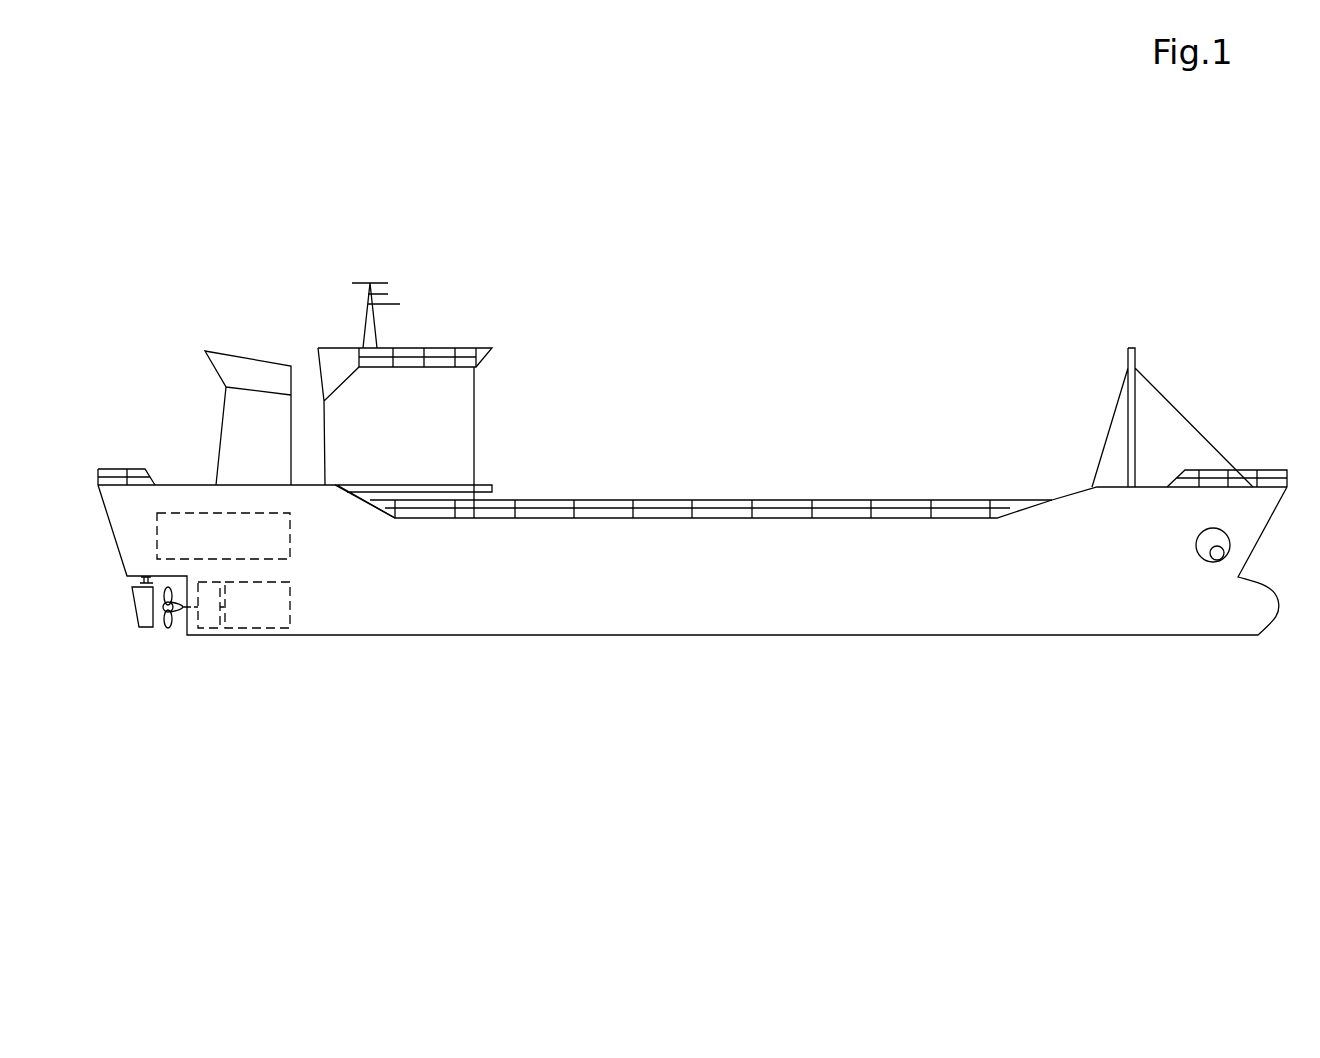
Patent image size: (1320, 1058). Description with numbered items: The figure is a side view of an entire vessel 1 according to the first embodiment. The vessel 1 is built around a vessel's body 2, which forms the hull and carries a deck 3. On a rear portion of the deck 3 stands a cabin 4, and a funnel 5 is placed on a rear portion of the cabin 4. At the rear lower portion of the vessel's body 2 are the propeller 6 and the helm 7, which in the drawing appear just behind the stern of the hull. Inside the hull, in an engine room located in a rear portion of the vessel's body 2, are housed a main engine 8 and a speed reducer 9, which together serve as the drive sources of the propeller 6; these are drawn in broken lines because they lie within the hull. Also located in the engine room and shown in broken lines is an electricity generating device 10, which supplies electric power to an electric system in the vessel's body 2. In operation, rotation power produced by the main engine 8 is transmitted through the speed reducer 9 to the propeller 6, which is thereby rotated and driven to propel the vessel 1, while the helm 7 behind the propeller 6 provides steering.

The vessel 1 is at (797, 325).
The vessel's body 2 is at (708, 610).
The deck 3 is at (767, 517).
The cabin 4 is at (442, 407).
The funnel 5 is at (235, 413).
The propeller 6 is at (164, 628).
The helm 7 is at (140, 630).
The main engine 8 is at (267, 612).
The speed reducer 9 is at (210, 617).
The electricity generating device 10 is at (272, 539).